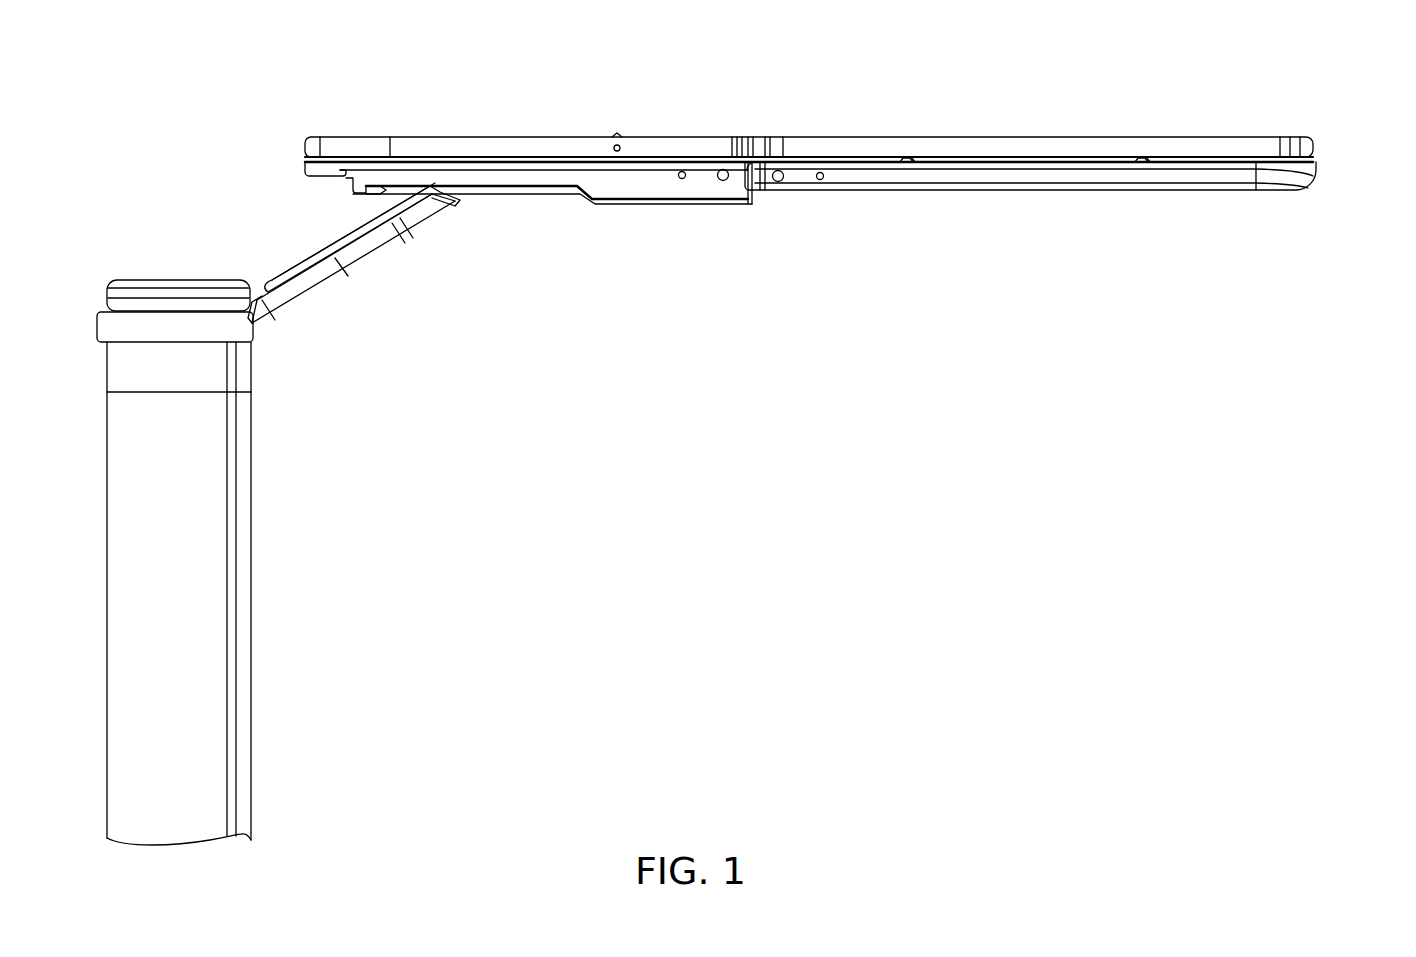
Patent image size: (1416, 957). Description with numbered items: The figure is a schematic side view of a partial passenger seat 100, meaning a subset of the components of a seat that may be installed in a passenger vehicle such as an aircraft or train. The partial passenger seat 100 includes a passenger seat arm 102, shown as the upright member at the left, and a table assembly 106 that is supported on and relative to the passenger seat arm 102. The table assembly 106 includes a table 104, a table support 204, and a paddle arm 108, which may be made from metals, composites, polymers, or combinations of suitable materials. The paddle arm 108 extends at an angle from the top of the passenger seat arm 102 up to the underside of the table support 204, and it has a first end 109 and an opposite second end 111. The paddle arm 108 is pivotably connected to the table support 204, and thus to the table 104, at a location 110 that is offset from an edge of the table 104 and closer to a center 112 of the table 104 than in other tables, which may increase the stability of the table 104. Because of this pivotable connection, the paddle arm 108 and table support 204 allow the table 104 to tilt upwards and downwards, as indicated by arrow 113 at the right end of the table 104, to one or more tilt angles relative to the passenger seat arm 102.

The partial passenger seat 100 is at (244, 112).
The passenger seat arm 102 is at (175, 570).
The table 104 is at (895, 162).
The table assembly 106 is at (685, 545).
The paddle arm 108 is at (330, 275).
The first end 109 is at (418, 212).
The location 110 is at (440, 190).
The second end 111 is at (258, 296).
The center 112 is at (805, 186).
The arrow 113 is at (1342, 88).
The table support 204 is at (515, 194).